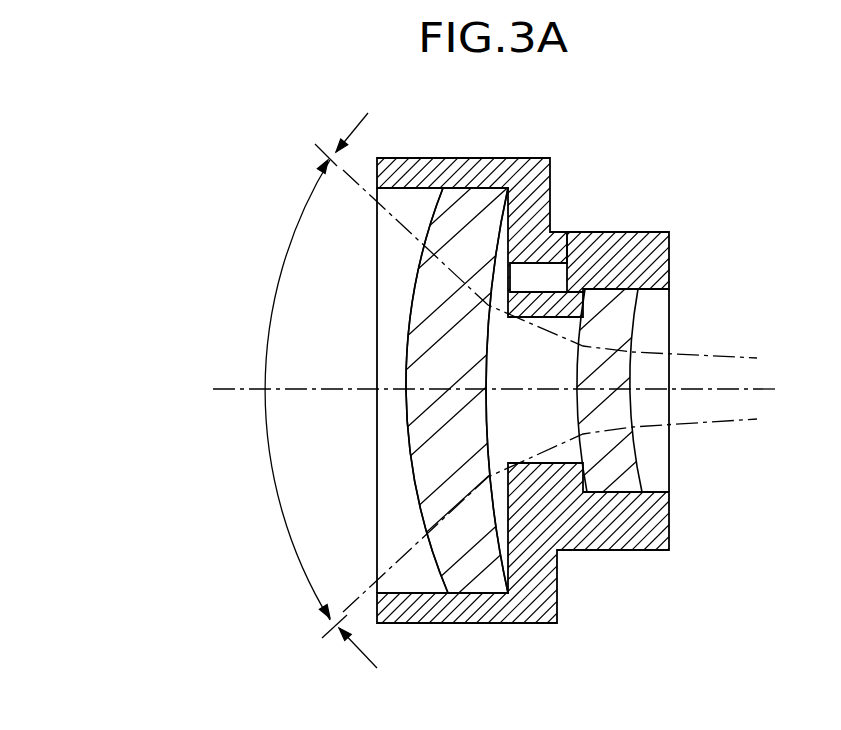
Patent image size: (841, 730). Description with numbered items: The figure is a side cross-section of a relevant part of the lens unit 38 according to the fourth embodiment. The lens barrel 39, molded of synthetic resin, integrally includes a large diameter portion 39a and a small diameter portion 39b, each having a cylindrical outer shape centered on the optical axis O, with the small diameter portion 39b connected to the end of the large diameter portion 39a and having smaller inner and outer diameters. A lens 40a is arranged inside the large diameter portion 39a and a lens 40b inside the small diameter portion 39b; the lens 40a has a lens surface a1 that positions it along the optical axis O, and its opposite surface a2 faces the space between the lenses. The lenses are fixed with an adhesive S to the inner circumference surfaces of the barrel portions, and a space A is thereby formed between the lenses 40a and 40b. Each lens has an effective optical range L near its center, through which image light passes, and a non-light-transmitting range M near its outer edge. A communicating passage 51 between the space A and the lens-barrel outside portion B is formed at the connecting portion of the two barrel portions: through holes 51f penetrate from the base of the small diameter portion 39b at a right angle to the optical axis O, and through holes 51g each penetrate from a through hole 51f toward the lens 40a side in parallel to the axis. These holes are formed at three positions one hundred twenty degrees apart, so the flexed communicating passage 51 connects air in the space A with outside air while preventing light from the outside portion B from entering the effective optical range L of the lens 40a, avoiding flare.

The lens unit 38 is at (729, 164).
The lens barrel 39 is at (672, 518).
The large diameter portion 39a is at (453, 623).
The small diameter portion 39b is at (613, 550).
The lens 40a is at (420, 400).
The lens 40b is at (534, 400).
The communicating passage 51 is at (592, 250).
The through hole 51f is at (557, 246).
The through hole 51g is at (572, 278).
The lens surface a1 is at (412, 500).
The image-side surface of first lens a2 is at (488, 412).
The space A is at (538, 376).
The lens-barrel outside portion B is at (701, 280).
The adhesive S is at (440, 190).
The non-light-transmitting range M is at (267, 687).
The effective optical range L is at (286, 254).
The optical axis O is at (245, 388).